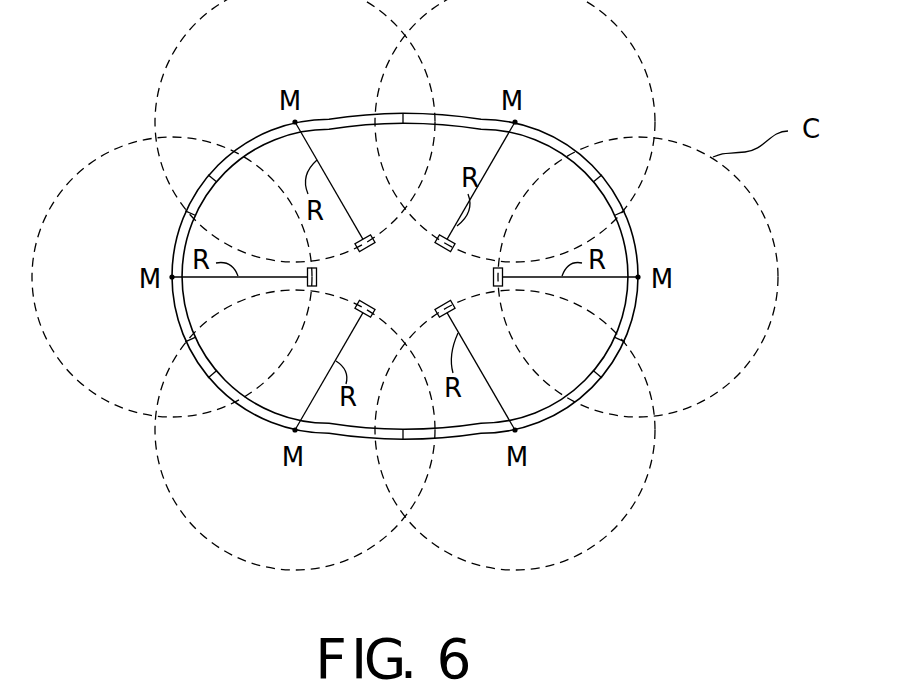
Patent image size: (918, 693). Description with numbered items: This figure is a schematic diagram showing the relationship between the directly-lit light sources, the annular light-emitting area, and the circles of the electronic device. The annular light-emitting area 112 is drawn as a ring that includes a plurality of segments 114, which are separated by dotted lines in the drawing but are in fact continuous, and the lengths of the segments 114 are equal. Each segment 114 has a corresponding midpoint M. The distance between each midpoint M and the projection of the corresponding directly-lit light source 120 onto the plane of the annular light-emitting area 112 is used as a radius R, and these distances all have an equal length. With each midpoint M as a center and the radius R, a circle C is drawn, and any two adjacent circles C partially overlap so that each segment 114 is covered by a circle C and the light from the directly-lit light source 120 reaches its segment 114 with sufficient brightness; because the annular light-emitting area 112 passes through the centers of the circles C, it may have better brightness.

The annular light-emitting area 112 is at (553, 128).
The segments 114 is at (268, 122).
The directly-lit light source 120 is at (493, 277).